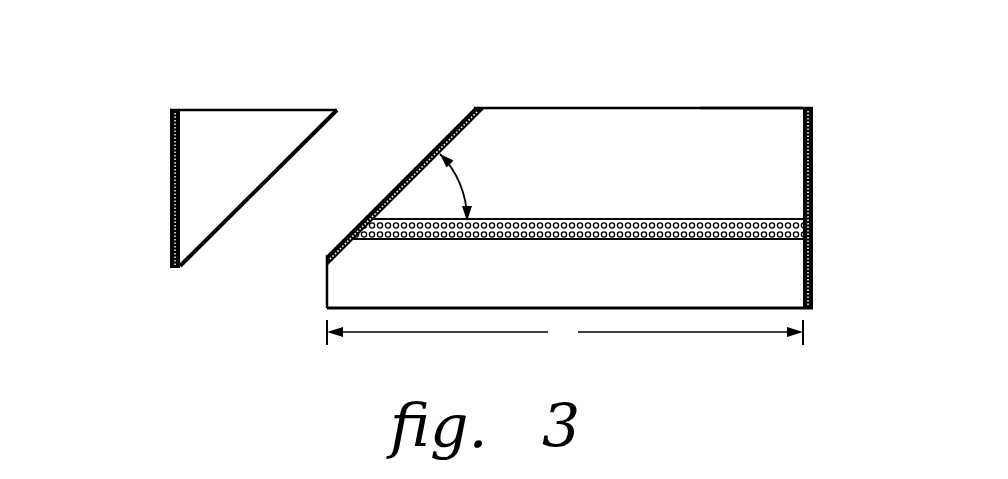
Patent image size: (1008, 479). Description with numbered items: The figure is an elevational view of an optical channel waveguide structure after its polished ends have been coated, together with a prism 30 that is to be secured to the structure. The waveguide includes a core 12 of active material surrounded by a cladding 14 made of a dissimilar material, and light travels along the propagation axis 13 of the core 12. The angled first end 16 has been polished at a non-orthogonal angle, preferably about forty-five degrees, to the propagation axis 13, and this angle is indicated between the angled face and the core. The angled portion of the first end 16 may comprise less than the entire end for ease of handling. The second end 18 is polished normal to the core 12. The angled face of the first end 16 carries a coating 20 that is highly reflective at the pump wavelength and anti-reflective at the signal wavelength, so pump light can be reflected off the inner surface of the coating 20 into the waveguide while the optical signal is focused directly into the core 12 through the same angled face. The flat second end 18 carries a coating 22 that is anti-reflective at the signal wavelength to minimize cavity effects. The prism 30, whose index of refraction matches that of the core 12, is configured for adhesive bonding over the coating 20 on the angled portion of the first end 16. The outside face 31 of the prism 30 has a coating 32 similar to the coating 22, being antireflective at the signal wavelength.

The core 12 is at (590, 221).
The propagation axis 13 is at (780, 220).
The cladding 14 is at (619, 196).
The angled first end 16 is at (478, 111).
The second end 18 is at (801, 112).
The coating 20 is at (433, 150).
The coating 22 is at (813, 270).
The prism 30 is at (194, 151).
The outside face 31 is at (182, 140).
The coating 32 is at (170, 212).